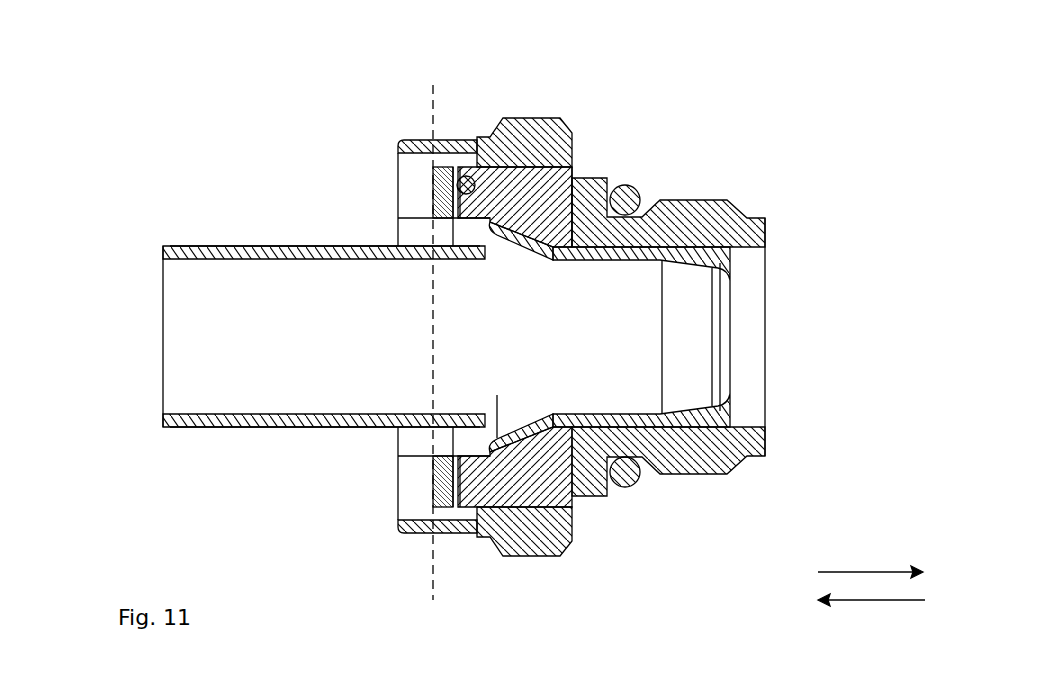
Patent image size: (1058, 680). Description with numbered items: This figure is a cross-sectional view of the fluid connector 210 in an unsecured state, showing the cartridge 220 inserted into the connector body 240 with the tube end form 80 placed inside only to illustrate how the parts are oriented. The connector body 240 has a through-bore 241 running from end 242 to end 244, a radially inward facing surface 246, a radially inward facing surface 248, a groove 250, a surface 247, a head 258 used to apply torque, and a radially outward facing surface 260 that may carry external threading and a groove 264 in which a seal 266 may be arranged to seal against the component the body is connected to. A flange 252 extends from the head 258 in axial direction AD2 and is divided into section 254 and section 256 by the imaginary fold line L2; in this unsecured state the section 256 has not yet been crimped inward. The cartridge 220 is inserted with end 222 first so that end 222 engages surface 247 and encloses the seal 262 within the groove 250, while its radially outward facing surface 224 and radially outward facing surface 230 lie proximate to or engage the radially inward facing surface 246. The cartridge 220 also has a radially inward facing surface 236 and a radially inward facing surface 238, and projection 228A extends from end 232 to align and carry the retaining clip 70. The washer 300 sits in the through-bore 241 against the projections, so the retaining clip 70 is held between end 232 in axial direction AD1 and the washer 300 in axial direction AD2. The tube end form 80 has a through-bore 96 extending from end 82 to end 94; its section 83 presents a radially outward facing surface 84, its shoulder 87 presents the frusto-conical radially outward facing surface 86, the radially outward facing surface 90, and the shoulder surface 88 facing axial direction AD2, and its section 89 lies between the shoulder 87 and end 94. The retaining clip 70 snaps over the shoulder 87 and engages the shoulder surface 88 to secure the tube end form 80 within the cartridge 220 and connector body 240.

The fluid connector 210 is at (147, 68).
The cartridge 220 is at (545, 190).
The end 222 is at (570, 207).
The radially outward facing surface 224 is at (577, 505).
The projection 228A is at (438, 190).
The radially outward facing surface 230 is at (515, 502).
The end 232 is at (455, 505).
The radially inward facing surface 236 is at (455, 433).
The radially inward facing surface 238 is at (513, 222).
The connector body 240 is at (752, 215).
The through-bore 241 is at (762, 337).
The end 242 is at (765, 437).
The end 244 is at (400, 146).
The radially inward facing surface 246 is at (537, 557).
The surface 247 is at (586, 470).
The radially inward facing surface 248 is at (748, 456).
The groove 250 is at (635, 190).
The flange 252 is at (420, 533).
The section 254 is at (455, 128).
The section 256 is at (417, 128).
The head 258 is at (533, 188).
The radially outward facing surface 260 is at (736, 200).
The seal 262 is at (585, 217).
The groove 264 is at (657, 240).
The O-ring 266 is at (628, 482).
The washer 300 is at (443, 227).
The retaining clip 70 is at (457, 185).
The tube end form 80 is at (228, 246).
The end 82 is at (745, 268).
The section 83 is at (698, 444).
The radially outward facing surface 84 is at (706, 200).
The radially outward facing surface 86 is at (548, 285).
The shoulder 87 is at (500, 430).
The shoulder surface 88 is at (482, 240).
The section 89 is at (205, 462).
The radially outward facing surface 90 is at (175, 246).
The end 94 is at (165, 425).
The through-bore 96 is at (200, 337).
The fold line L2 is at (430, 585).
The axial direction AD1 is at (850, 572).
The axial direction AD2 is at (868, 600).